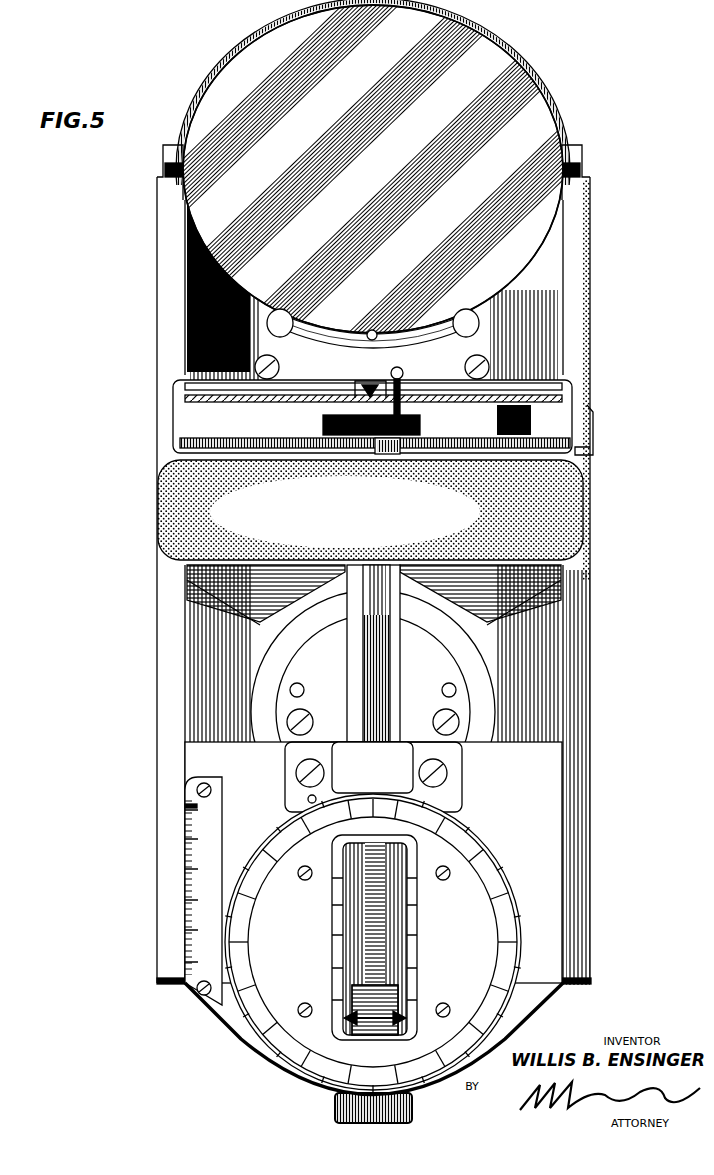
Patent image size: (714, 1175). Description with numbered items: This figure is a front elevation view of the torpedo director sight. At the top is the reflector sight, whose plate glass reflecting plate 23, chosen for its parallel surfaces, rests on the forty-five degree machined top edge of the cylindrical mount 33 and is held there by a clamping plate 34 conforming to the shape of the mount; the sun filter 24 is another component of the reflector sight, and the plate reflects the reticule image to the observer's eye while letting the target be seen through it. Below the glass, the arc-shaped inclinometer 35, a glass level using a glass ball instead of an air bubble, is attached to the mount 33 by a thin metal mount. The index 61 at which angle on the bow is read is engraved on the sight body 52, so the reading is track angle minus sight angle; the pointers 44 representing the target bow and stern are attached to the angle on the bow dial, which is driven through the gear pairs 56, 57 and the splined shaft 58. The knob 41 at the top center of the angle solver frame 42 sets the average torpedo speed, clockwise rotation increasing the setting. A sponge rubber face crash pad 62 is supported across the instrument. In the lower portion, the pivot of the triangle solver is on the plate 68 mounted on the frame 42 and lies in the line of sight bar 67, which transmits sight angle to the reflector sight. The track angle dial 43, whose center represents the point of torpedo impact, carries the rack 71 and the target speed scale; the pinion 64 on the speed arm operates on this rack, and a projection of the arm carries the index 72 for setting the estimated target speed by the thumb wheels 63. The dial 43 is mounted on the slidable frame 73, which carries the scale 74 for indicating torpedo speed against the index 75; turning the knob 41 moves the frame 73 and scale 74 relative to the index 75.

The reflecting plate 23 is at (548, 107).
The sun filter 24 is at (470, 2).
The cylindrical mount 33 is at (568, 234).
The clamping plate 34 is at (572, 153).
The inclinometer 35 is at (462, 318).
The knob 41 is at (323, 430).
The computer mechanism frame 42 is at (247, 707).
The track angle dial 43 is at (452, 862).
The pointer 44 is at (192, 388).
The sight body 52 is at (575, 391).
The gear pair 56 is at (372, 446).
The gear pair 57 is at (577, 448).
The splined shaft 58 is at (392, 672).
The index 61 is at (402, 378).
The face crash pad 62 is at (592, 504).
The thumb wheels 63 is at (315, 1058).
The pinion 64 is at (352, 1030).
The line of sight bar 67 is at (350, 670).
The plate 68 is at (420, 633).
The rack 71 is at (378, 898).
The index 72 is at (407, 1018).
The slidable frame 73 is at (215, 757).
The scale 74 is at (192, 868).
The index 75 is at (178, 805).